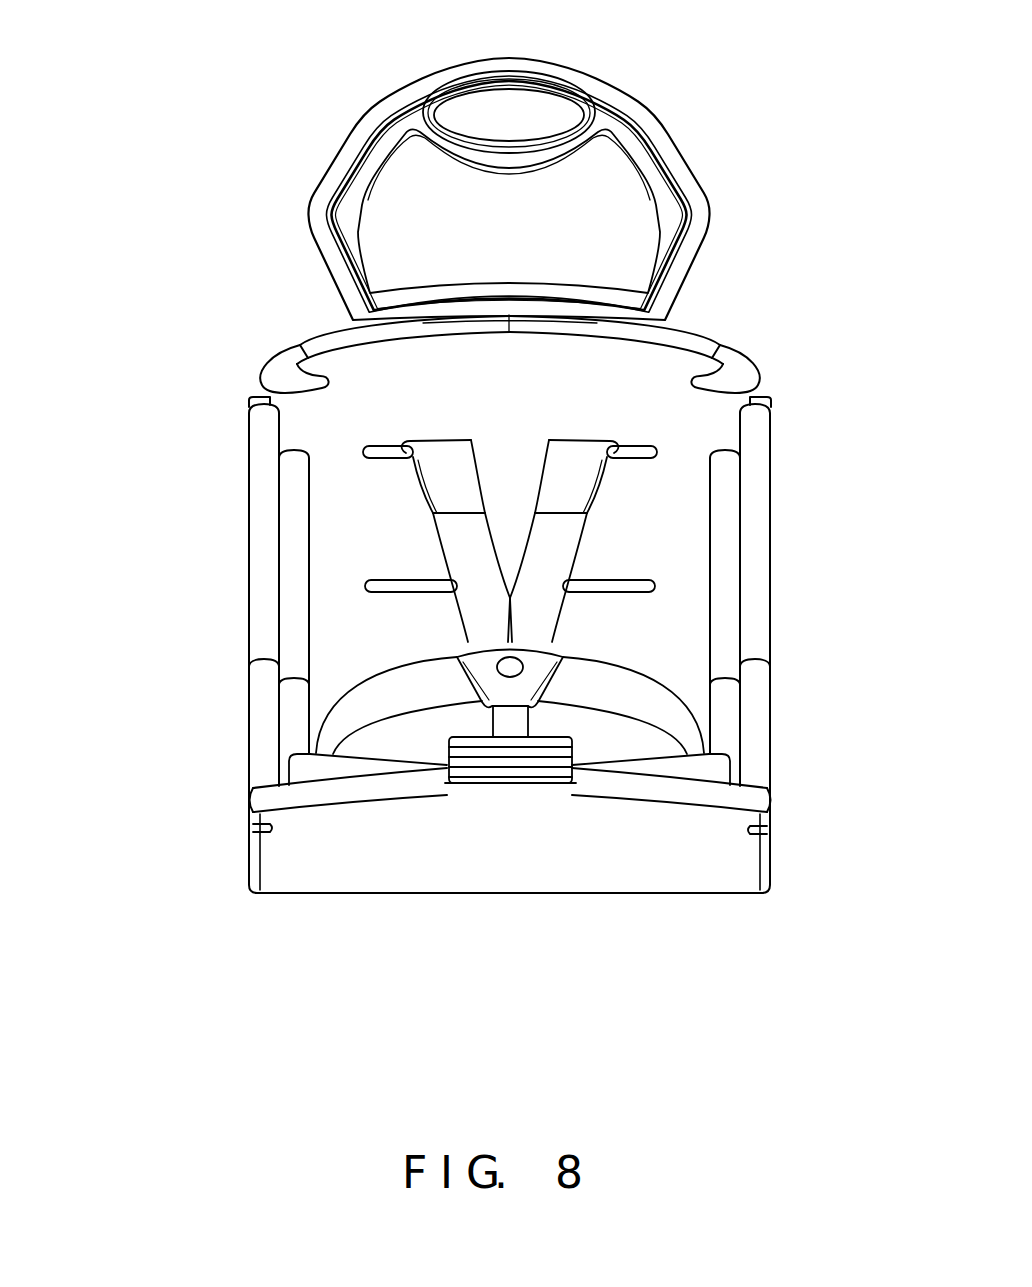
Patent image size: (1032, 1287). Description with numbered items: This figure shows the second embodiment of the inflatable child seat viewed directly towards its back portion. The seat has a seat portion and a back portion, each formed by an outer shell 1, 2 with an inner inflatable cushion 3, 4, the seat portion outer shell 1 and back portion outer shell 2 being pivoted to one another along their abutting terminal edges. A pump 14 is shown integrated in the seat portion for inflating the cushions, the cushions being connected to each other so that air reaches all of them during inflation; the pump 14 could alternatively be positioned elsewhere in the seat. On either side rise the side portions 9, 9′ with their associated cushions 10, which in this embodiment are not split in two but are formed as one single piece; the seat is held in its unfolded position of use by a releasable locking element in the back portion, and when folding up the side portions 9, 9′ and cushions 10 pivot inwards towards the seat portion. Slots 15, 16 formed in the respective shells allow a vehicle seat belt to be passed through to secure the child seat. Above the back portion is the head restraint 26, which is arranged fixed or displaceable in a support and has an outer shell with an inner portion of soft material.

The seat portion outer shell 1 is at (712, 860).
The back portion outer shell 2 is at (331, 350).
The seat portion inflatable cushion 3 is at (705, 768).
The back portion inflatable cushion 4 is at (700, 437).
The side portion 9 is at (258, 580).
The side portion 9′ is at (760, 630).
The side portion cushion 10 is at (290, 520).
The pump 14 is at (537, 767).
The slot 15 is at (252, 828).
The slot 16 is at (743, 388).
The head restraint 26 is at (403, 193).